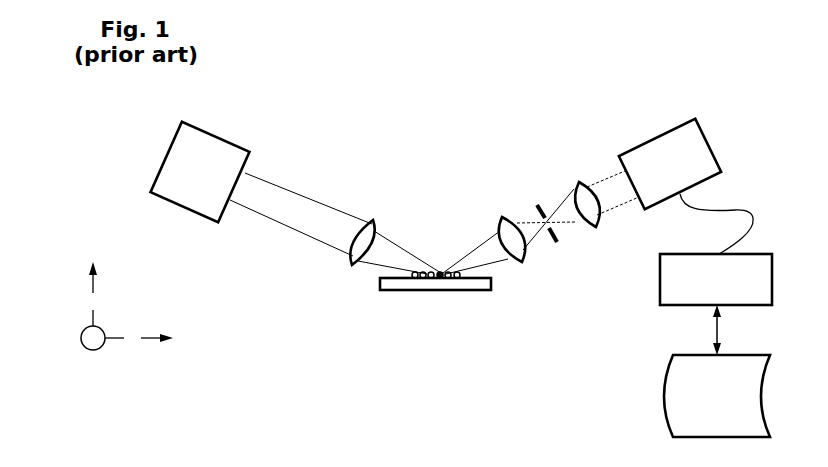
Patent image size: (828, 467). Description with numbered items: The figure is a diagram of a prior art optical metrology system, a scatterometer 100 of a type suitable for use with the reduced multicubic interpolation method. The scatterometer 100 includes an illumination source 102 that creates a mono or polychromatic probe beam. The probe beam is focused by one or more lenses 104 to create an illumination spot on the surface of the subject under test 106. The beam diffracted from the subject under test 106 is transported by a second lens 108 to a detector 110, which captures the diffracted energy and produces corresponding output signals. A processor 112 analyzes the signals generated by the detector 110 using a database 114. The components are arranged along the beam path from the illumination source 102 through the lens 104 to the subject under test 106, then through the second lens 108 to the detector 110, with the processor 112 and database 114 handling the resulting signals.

The scatterometer 100 is at (62, 102).
The illumination source 102 is at (200, 172).
The lens 104 is at (351, 265).
The subject under test 106 is at (435, 290).
The second lens 108 is at (523, 262).
The detector 110 is at (670, 164).
The processor 112 is at (716, 279).
The database 114 is at (717, 396).